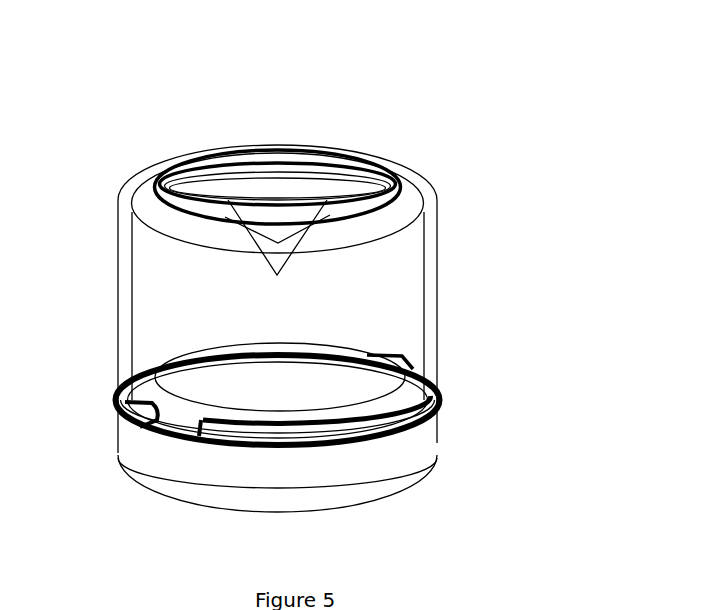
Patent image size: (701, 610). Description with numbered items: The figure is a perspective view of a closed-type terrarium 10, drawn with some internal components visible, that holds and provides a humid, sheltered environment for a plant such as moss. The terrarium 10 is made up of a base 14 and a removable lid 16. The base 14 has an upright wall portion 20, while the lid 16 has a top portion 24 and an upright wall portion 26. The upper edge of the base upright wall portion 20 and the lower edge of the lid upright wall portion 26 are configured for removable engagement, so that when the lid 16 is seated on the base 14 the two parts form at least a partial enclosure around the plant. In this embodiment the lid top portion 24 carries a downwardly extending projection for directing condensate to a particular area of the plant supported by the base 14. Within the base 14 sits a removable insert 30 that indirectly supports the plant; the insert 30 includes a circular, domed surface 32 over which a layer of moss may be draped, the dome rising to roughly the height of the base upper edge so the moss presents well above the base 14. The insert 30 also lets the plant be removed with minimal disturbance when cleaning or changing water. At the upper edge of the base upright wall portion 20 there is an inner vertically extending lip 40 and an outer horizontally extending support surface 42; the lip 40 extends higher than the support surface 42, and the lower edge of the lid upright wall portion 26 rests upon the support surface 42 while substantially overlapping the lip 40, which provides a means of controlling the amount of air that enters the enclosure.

The terrarium 10 is at (324, 293).
The base 14 is at (440, 439).
The removable lid 16 is at (442, 279).
The upright wall portion 20 is at (409, 451).
The top portion 24 is at (296, 190).
The upright wall portion 26 is at (434, 316).
The removable insert 30 is at (221, 344).
The domed surface 32 is at (304, 362).
The inner vertically extending lip 40 is at (243, 437).
The outer horizontally extending support surface 42 is at (151, 436).